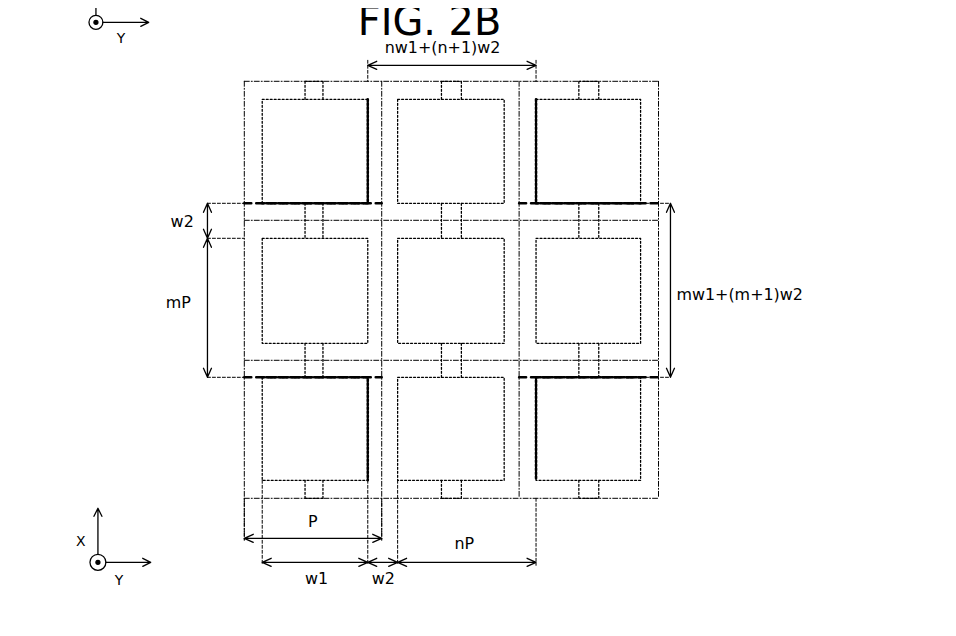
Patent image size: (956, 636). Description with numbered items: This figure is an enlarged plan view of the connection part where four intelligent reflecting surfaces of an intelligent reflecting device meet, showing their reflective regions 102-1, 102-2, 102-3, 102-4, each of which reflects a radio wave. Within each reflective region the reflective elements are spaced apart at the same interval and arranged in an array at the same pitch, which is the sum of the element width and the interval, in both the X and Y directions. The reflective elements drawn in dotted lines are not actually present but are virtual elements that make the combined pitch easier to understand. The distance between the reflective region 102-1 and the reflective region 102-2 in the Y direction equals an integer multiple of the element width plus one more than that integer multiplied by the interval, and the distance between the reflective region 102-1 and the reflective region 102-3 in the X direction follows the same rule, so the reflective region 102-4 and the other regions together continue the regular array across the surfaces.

The reflective region 102-1 is at (238, 385).
The reflective region 102-2 is at (668, 385).
The reflective region 102-3 is at (238, 198).
The reflective region 102-4 is at (668, 198).